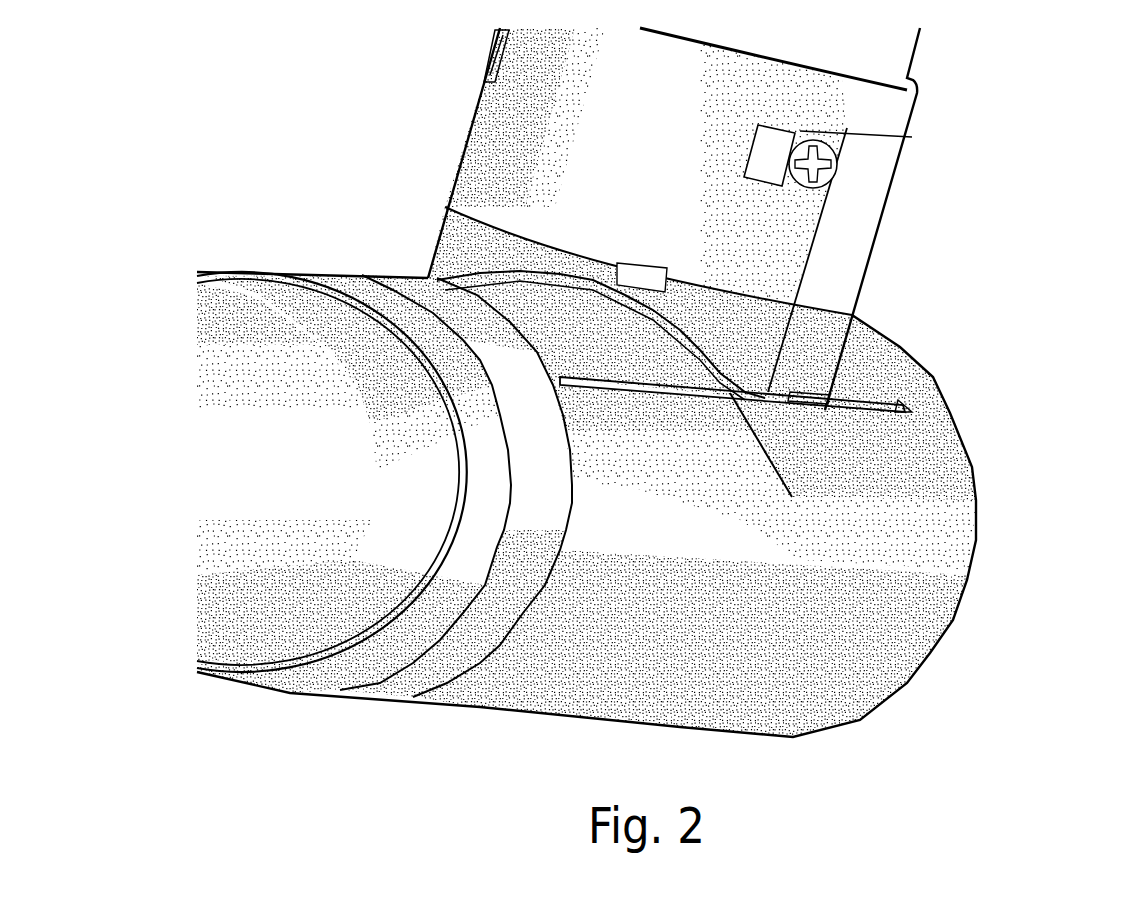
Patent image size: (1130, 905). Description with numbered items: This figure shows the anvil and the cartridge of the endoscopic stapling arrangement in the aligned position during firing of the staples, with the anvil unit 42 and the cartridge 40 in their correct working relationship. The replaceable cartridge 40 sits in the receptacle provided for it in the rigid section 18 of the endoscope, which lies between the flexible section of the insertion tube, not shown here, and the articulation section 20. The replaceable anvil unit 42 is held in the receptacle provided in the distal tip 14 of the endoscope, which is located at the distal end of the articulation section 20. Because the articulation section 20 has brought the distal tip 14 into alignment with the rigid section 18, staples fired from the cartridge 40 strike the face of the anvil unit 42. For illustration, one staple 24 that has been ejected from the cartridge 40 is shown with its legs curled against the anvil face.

The distal tip 14 is at (910, 123).
The rigid section 18 is at (880, 637).
The articulation section 20 is at (293, 677).
The staple 24 is at (792, 497).
The cartridge 40 is at (875, 386).
The anvil unit 42 is at (862, 345).